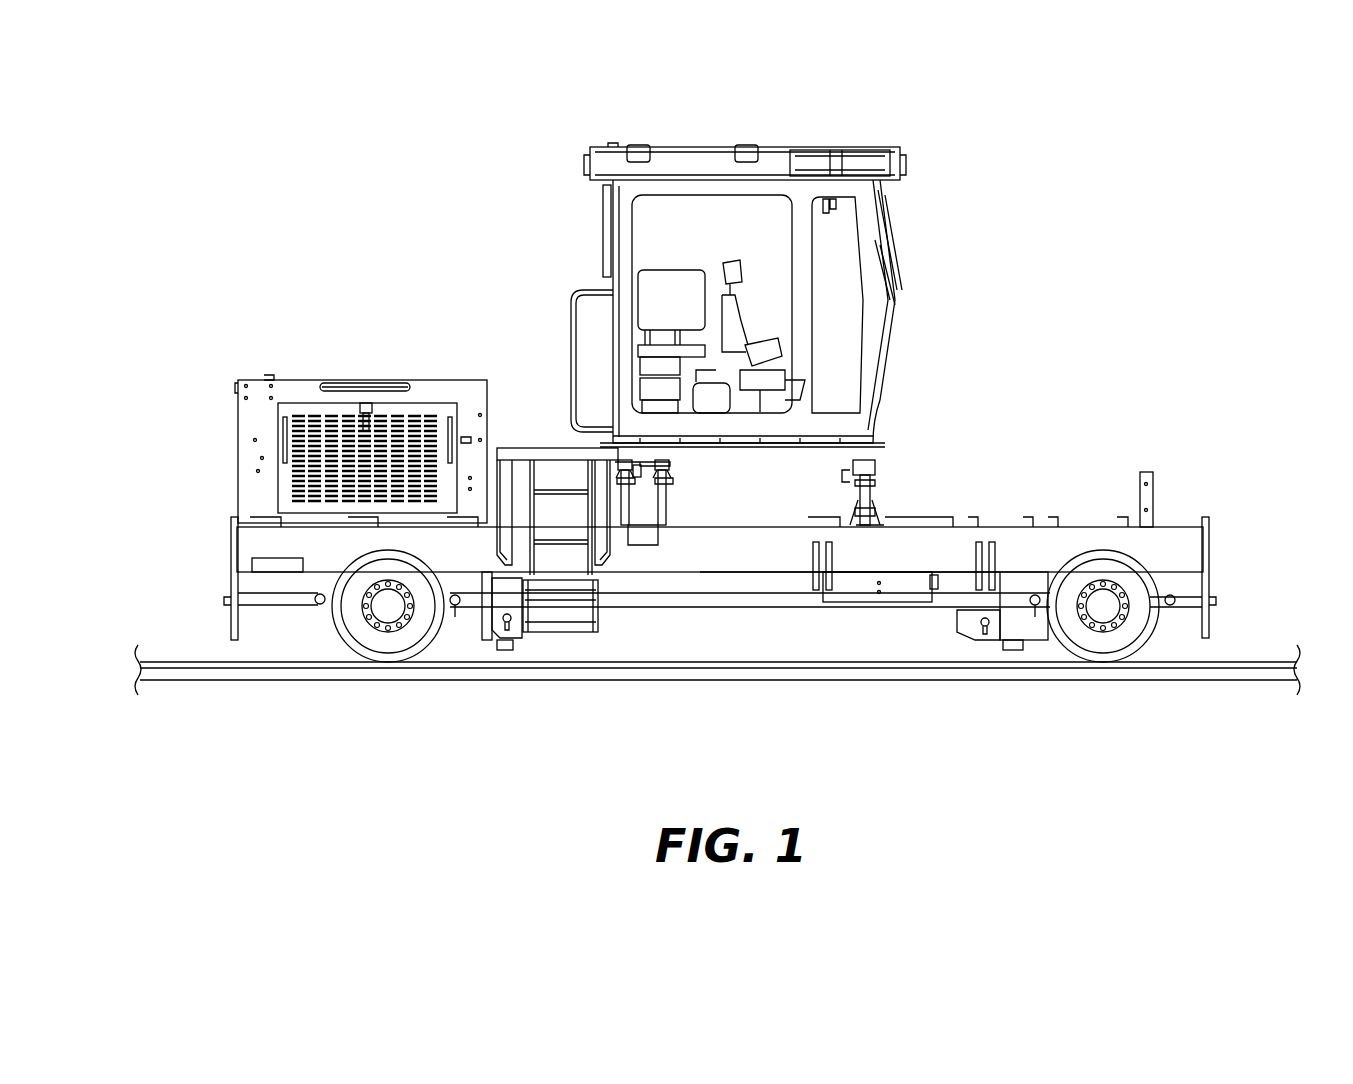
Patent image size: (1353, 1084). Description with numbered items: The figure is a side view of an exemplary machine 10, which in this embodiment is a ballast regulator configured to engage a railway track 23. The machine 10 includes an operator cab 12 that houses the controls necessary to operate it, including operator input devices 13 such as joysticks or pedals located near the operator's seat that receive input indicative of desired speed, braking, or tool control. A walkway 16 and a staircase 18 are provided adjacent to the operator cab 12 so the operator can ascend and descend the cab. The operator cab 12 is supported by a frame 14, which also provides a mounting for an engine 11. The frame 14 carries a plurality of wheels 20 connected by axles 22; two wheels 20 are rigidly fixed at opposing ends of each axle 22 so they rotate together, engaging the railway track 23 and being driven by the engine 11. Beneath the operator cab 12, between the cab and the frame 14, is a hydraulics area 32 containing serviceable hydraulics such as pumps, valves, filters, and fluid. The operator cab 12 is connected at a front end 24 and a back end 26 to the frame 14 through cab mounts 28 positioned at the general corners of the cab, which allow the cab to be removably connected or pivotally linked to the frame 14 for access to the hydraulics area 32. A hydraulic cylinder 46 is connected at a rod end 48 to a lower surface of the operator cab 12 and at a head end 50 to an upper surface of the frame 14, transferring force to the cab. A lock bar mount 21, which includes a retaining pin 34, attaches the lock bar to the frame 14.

The machine 10 is at (968, 128).
The engine 11 is at (297, 390).
The operator cab 12 is at (868, 187).
The operator input devices 13 is at (872, 303).
The frame 14 is at (1162, 550).
The walkway 16 is at (513, 450).
The staircase 18 is at (607, 563).
The wheels 20 is at (349, 627).
The lock bar mount 21 is at (872, 512).
The axles 22 is at (378, 633).
The railway track 23 is at (1237, 680).
The front end 24 is at (880, 440).
The back end 26 is at (613, 440).
The cab mounts 28 is at (600, 478).
The hydraulics area 32 is at (758, 507).
The retaining pin 34 is at (665, 497).
The hydraulic cylinder 46 is at (668, 472).
The rod end 48 is at (690, 462).
The head end 50 is at (665, 508).